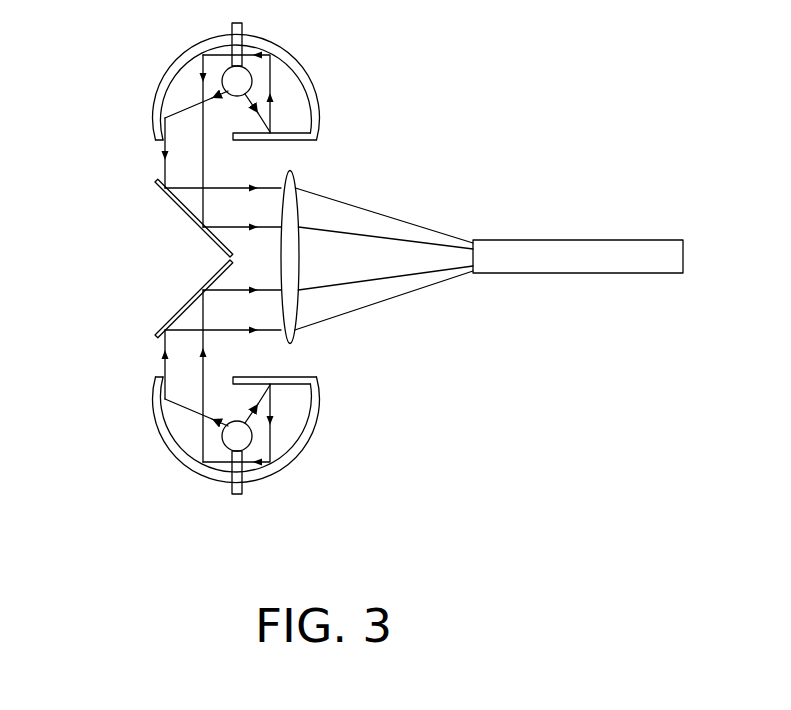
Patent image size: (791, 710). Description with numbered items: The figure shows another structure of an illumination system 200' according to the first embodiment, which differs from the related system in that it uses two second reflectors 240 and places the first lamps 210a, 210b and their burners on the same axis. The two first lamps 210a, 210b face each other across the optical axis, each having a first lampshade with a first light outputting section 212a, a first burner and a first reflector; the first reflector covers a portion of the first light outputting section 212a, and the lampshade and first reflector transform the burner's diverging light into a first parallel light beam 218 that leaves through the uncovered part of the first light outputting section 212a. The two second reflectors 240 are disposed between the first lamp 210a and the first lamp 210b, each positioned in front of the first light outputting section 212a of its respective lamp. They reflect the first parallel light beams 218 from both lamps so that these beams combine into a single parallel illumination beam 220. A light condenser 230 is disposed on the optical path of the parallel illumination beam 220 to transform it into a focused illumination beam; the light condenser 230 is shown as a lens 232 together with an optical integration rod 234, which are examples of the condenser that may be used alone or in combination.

The illumination system 200' is at (360, 282).
The first lamp 210a is at (152, 92).
The first lamp 210b is at (170, 465).
The first light outputting section 212a is at (185, 134).
The first parallel light beam 218 is at (210, 170).
The parallel illumination beam 220 is at (270, 340).
The light condenser 230 is at (482, 299).
The lens 232 is at (287, 307).
The optical integration rod 234 is at (500, 275).
The second reflector 240 is at (156, 186).